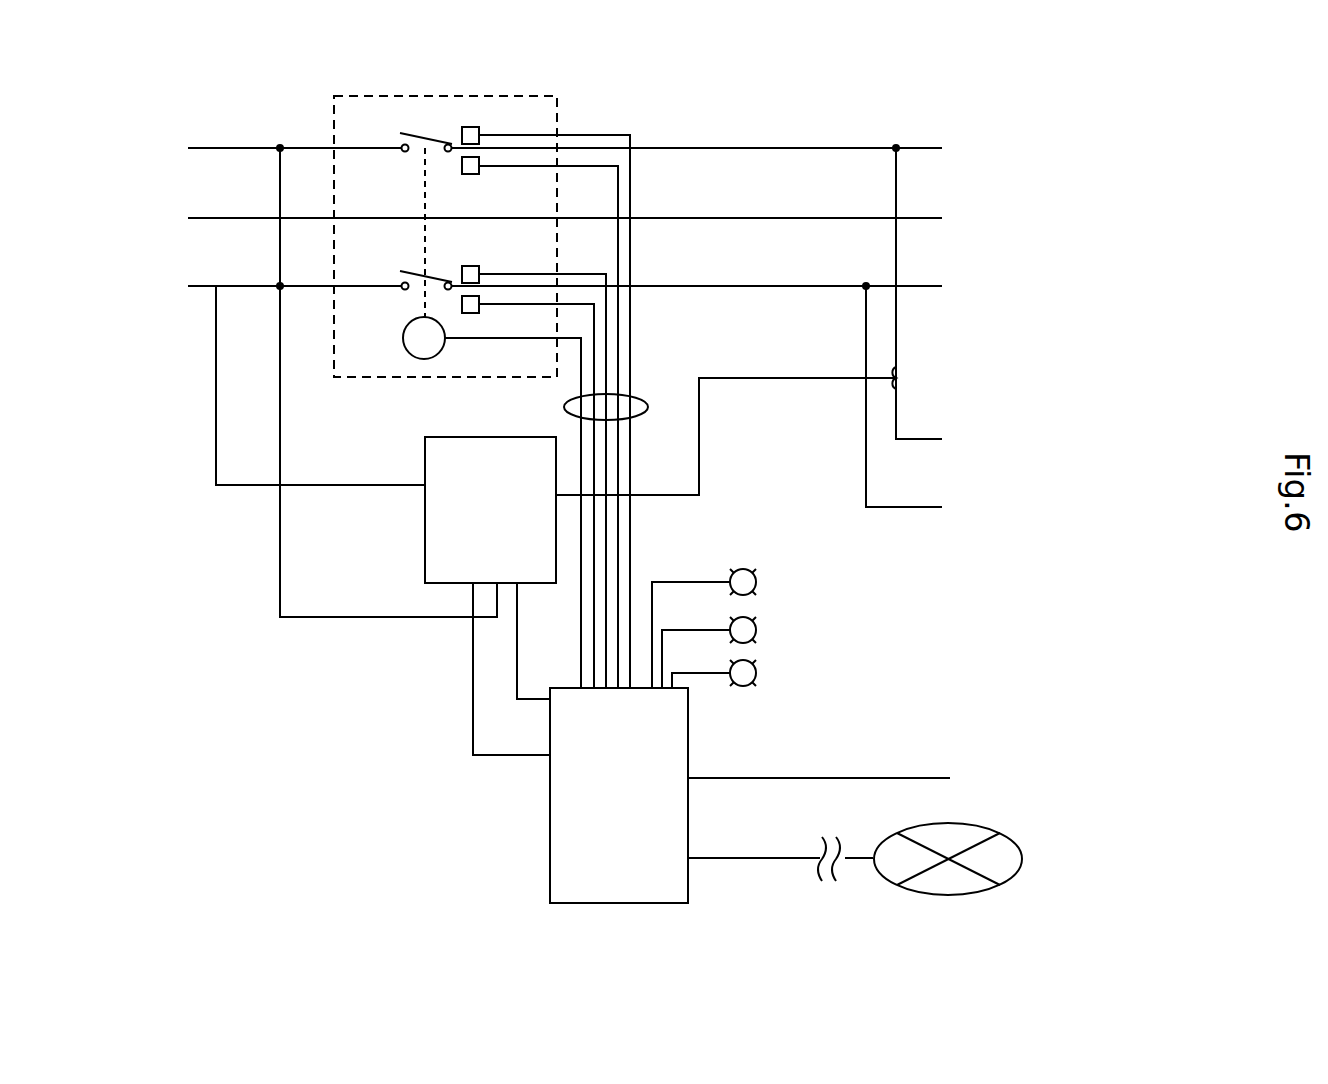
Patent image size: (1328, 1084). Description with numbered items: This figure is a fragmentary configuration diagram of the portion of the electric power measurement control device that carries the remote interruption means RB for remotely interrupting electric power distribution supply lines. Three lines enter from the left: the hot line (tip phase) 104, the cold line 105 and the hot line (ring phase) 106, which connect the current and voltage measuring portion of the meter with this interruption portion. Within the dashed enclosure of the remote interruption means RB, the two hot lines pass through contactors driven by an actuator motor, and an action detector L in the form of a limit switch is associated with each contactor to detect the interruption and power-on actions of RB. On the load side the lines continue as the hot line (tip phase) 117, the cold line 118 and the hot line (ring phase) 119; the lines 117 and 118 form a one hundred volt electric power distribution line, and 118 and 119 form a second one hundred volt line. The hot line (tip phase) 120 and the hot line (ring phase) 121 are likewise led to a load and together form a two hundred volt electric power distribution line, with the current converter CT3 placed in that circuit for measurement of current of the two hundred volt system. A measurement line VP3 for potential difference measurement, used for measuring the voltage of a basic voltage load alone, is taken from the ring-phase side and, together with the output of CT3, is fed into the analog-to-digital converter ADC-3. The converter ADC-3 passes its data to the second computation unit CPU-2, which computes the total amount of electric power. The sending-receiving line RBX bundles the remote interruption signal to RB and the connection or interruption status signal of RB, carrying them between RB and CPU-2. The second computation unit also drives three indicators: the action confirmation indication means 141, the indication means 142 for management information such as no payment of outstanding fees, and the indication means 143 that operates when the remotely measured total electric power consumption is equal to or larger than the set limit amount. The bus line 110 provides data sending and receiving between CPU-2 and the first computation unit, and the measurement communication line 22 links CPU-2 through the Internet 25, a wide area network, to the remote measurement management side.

The hot line (tip phase) 104 is at (531, 157).
The cold line 105 is at (531, 228).
The hot line (ring phase) 106 is at (531, 296).
The hot line (tip phase) for connecting with a load 117 is at (956, 151).
The cold line for connecting with a load 118 is at (993, 220).
The hot line (ring phase) for connecting with a load 119 is at (941, 288).
The hot line (tip phase) for connecting with a load 120 is at (958, 300).
The hot line (ring phase) for connecting with a load 121 is at (943, 403).
The action confirmation indication means 141 is at (757, 578).
The indication means for management information 142 is at (757, 626).
The indication means for exceeding the limit amount 143 is at (757, 669).
The bus line 110 is at (855, 752).
The measurement communication line 22 is at (770, 857).
The Internet (wide area network) 25 is at (962, 825).
The remote interruption means RB is at (435, 378).
The sending-receiving line RBX is at (636, 406).
The action detector (limit switch) L is at (483, 164).
The current converter CT3 is at (929, 379).
The measurement line for potential difference measurement VP3 is at (212, 382).
The analog-to-digital converter ADC-3 is at (490, 510).
The second computation unit CPU-2 is at (619, 795).